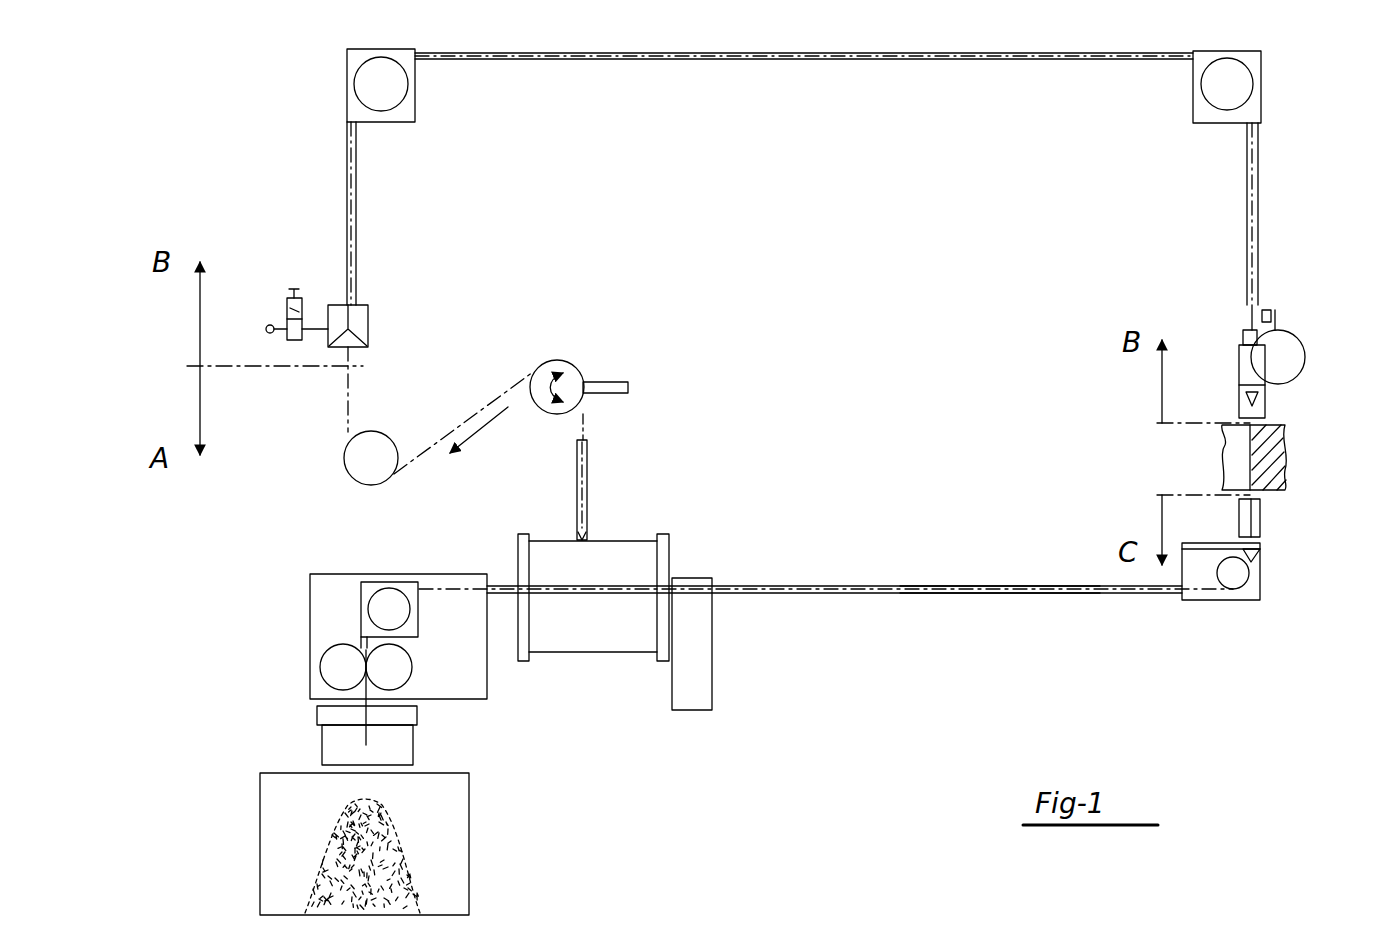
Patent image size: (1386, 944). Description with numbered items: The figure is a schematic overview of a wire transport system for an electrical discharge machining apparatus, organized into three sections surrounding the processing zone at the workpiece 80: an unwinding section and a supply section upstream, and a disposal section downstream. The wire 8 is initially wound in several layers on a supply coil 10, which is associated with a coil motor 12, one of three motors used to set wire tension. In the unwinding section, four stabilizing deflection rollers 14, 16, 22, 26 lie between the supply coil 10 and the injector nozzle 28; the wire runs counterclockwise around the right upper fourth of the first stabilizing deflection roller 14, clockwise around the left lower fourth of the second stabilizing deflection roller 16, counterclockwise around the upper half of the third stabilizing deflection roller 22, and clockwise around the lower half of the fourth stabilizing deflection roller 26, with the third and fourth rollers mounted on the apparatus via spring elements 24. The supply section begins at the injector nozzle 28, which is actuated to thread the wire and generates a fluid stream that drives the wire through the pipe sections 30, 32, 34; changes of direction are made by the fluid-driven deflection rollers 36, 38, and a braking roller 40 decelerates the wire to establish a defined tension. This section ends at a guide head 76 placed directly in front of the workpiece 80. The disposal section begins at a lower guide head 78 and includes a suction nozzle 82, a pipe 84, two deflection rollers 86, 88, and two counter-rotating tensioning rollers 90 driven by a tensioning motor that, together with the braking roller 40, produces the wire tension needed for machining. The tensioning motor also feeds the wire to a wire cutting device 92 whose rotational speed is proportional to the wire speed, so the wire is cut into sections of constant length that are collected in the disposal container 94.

The wire 8 is at (462, 422).
The supply coil 10 is at (608, 566).
The coil motor 12 is at (700, 652).
The first stabilizing deflection roller 14 is at (577, 536).
The second stabilizing deflection roller 16 is at (577, 457).
The third stabilizing deflection roller 22 is at (571, 377).
The spring elements 24 is at (598, 390).
The fourth stabilizing deflection roller 26 is at (357, 472).
The injector nozzle 28 is at (360, 325).
The pipe section 30 is at (358, 200).
The pipe section 32 is at (710, 60).
The pipe section 34 is at (1247, 190).
The fluid-driven deflection roller 36 is at (347, 58).
The fluid-driven deflection roller 38 is at (1255, 62).
The braking roller 40 is at (1288, 357).
The guide head 76 is at (1262, 408).
The lower guide head 78 is at (1255, 517).
The workpiece 80 is at (1275, 478).
The suction nozzle 82 is at (1262, 552).
The pipe 84 is at (1030, 595).
The deflection roller 86 is at (1242, 600).
The deflection roller 88 is at (368, 588).
The tensioning rollers 90 is at (402, 667).
The wire cutting device 92 is at (410, 714).
The disposal container 94 is at (450, 850).